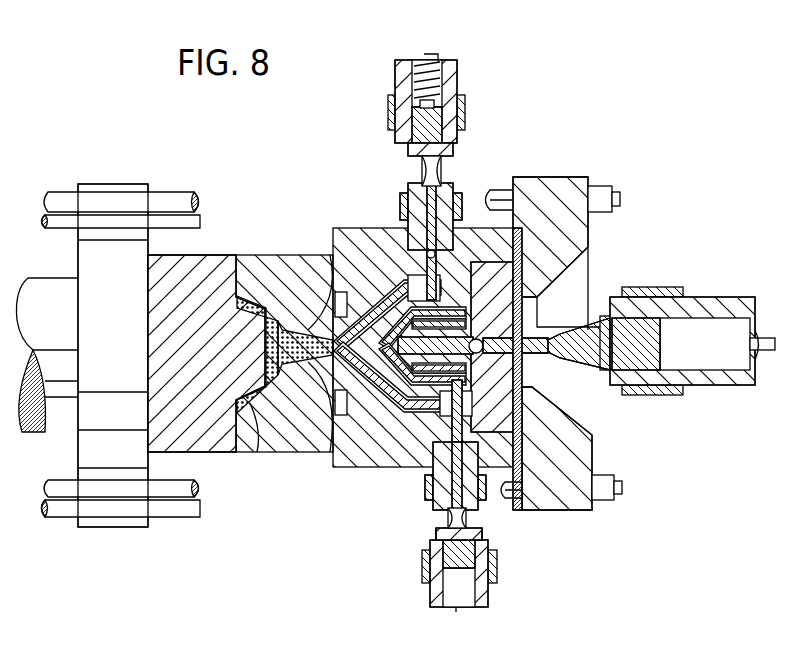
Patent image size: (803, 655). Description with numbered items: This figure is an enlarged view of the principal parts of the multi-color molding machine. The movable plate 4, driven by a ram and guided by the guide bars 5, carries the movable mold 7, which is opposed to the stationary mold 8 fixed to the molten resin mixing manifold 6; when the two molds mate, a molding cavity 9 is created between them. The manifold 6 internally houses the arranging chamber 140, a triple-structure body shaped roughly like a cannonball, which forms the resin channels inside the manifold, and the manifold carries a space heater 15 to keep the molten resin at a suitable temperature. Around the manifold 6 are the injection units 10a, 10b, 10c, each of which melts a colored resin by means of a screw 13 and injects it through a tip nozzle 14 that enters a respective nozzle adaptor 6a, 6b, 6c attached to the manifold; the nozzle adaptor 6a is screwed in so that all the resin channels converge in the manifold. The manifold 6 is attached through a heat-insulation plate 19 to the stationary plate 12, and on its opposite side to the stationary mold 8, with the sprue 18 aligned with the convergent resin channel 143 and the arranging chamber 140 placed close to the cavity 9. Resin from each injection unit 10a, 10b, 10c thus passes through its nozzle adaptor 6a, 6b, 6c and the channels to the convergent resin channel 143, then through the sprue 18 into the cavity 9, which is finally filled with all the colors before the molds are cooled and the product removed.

The movable plate 4 is at (124, 527).
The guide bars 5 is at (185, 518).
The molten resin mixing manifold 6 is at (365, 466).
The nozzle adaptor 6a is at (505, 412).
The nozzle adaptor 6b is at (408, 195).
The nozzle adaptor 6c is at (438, 508).
The movable mold 7 is at (218, 255).
The stationary mold 8 is at (262, 255).
The molding cavity 9 is at (256, 422).
The injection unit 10a is at (722, 300).
The injection unit 10b is at (457, 86).
The injection unit 10c is at (488, 596).
The stationary plate 12 is at (586, 510).
The screw 13 is at (425, 62).
The tip nozzle 14 is at (440, 172).
The space heater 15 is at (392, 455).
The sprue 18 is at (292, 378).
The heat-insulation plate 19 is at (512, 236).
The arranging chamber 140 is at (383, 303).
The convergent resin channel 143 is at (302, 422).